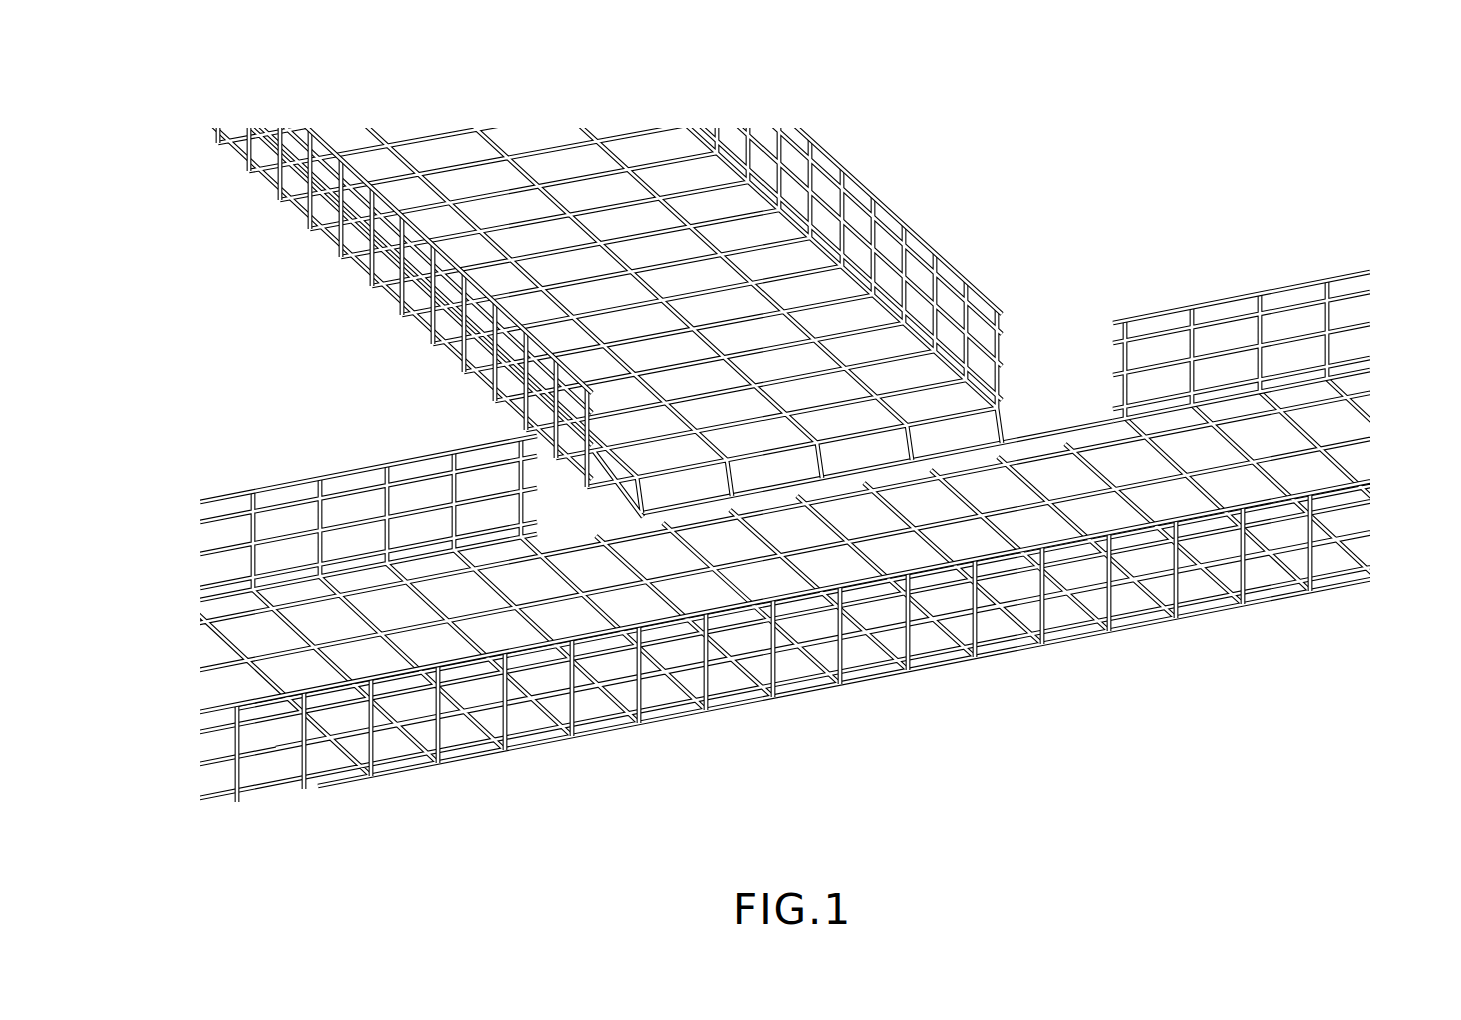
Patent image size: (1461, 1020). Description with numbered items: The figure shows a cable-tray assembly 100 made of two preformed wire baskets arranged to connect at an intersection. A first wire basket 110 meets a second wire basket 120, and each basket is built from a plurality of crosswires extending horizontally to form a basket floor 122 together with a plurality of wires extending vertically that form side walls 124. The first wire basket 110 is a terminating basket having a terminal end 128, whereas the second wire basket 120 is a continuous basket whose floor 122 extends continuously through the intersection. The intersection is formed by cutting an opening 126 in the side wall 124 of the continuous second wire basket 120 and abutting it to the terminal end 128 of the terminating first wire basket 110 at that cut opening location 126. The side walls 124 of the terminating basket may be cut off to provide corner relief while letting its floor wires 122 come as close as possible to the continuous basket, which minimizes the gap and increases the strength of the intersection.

The cable-tray assembly 100 is at (807, 428).
The first wire basket 110 is at (823, 150).
The second wire basket 120 is at (807, 494).
The basket floor 122 is at (392, 240).
The side walls 124 is at (905, 218).
The opening 126 is at (1118, 353).
The terminal end 128 is at (1008, 432).